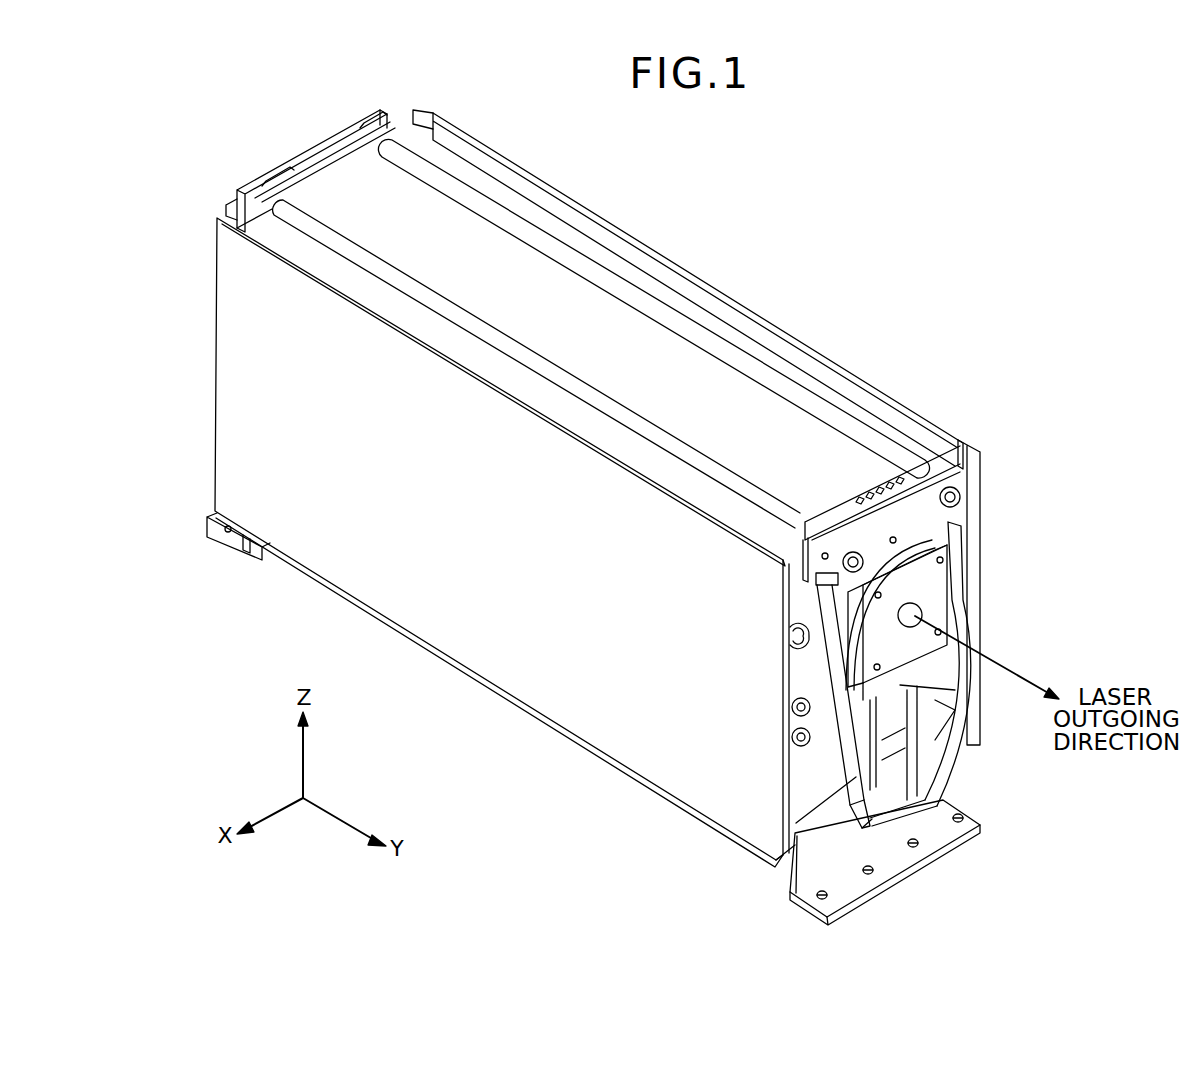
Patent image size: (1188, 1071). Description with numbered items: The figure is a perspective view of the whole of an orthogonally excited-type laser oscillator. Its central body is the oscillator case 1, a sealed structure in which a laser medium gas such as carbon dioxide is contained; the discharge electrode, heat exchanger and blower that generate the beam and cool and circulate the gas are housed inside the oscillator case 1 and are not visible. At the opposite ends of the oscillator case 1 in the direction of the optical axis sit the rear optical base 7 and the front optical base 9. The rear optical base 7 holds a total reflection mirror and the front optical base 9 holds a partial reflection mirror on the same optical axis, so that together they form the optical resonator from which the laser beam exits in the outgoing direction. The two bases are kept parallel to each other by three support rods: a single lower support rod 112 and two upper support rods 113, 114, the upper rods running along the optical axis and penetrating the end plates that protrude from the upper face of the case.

The oscillator case 1 is at (843, 365).
The rear optical base 7 is at (271, 172).
The front optical base 9 is at (942, 525).
The support rod 112 is at (947, 808).
The upper support rod 113 is at (730, 498).
The upper support rod 114 is at (860, 418).